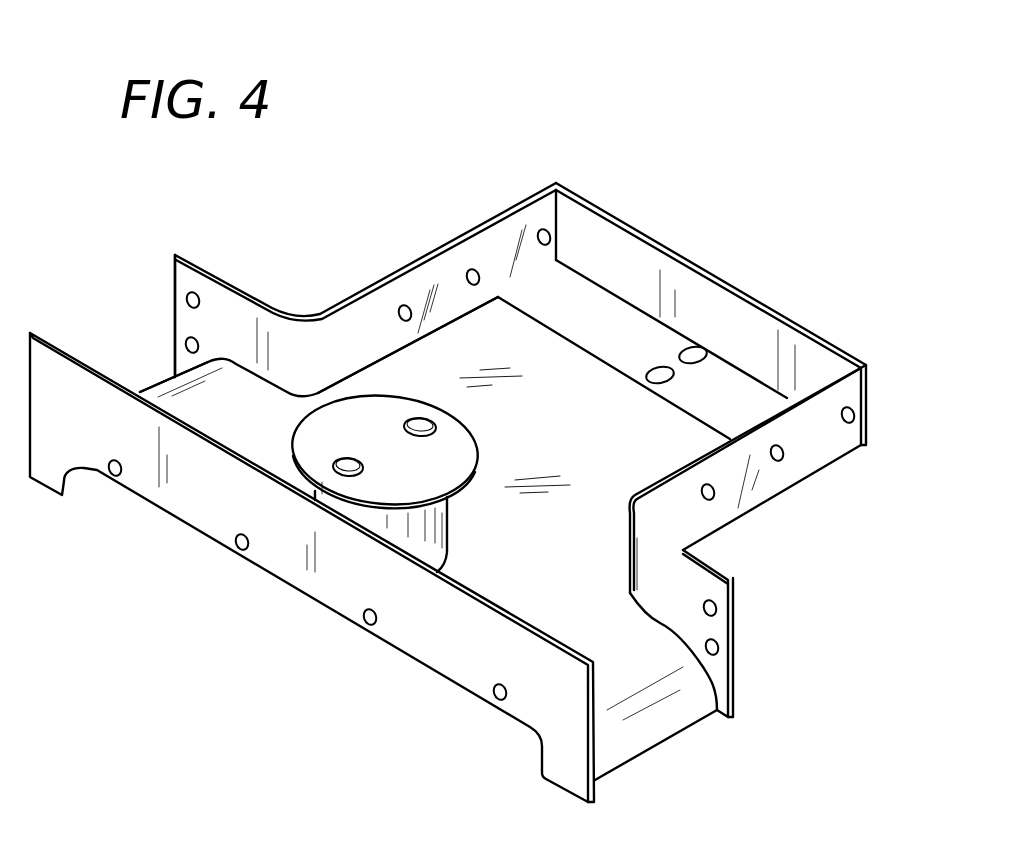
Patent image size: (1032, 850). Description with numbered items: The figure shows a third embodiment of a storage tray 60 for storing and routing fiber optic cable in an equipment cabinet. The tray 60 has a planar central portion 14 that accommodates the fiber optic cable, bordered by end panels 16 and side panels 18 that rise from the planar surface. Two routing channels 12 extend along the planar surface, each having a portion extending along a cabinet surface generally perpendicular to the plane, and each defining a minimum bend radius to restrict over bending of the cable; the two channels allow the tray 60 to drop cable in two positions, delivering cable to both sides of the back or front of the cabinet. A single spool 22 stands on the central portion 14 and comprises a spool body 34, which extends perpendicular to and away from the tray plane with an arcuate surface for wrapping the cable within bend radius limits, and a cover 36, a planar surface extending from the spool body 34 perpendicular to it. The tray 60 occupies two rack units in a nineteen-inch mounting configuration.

The routing channel 12 is at (173, 387).
The central portion 14 is at (580, 383).
The end panel 16 is at (730, 312).
The side panel 18 is at (452, 277).
The spool 22 is at (388, 475).
The spool body 34 is at (421, 537).
The cover 36 is at (305, 453).
The tray 60 is at (791, 648).